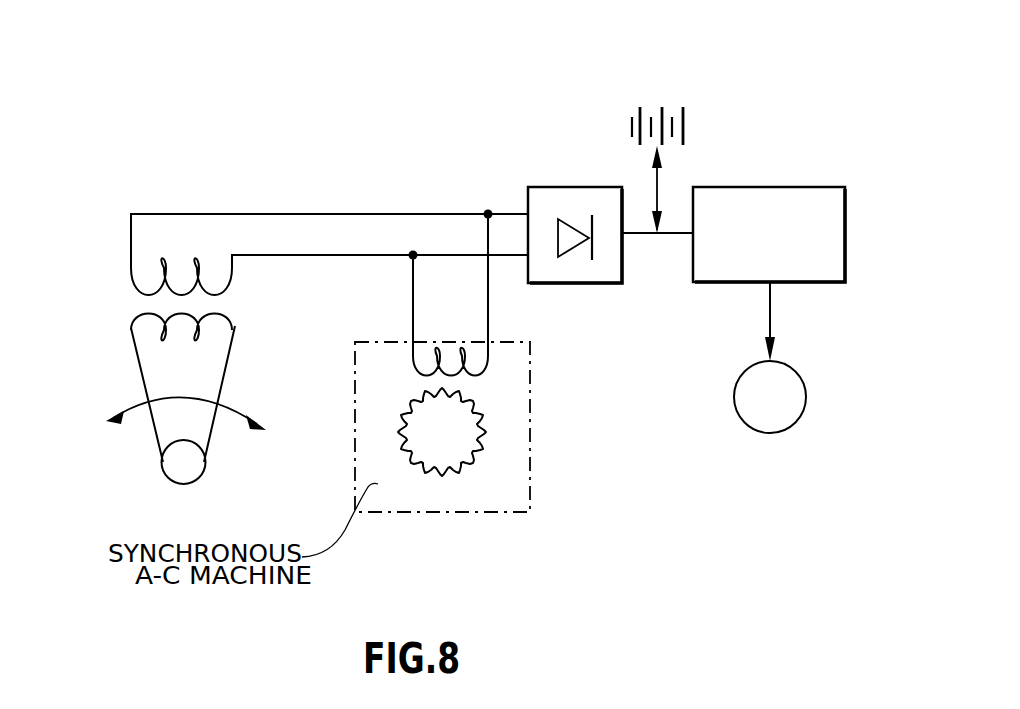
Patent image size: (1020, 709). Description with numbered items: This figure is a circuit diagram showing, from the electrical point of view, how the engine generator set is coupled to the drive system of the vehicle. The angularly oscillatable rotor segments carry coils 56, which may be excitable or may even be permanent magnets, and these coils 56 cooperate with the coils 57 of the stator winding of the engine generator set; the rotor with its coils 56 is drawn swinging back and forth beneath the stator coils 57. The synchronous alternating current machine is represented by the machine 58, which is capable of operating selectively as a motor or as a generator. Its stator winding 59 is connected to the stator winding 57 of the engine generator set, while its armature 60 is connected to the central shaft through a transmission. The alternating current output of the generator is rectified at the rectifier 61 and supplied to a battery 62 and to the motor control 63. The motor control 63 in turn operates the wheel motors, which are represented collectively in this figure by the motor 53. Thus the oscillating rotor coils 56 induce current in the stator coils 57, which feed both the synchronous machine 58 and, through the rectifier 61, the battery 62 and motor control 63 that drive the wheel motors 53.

The wheel motors 53 is at (783, 418).
The coils 56 is at (140, 330).
The coils 57 is at (138, 272).
The machine 58 is at (530, 404).
The stator winding 59 is at (488, 364).
The armature 60 is at (470, 438).
The rectifier 61 is at (548, 190).
The battery 62 is at (670, 108).
The motor control 63 is at (832, 207).